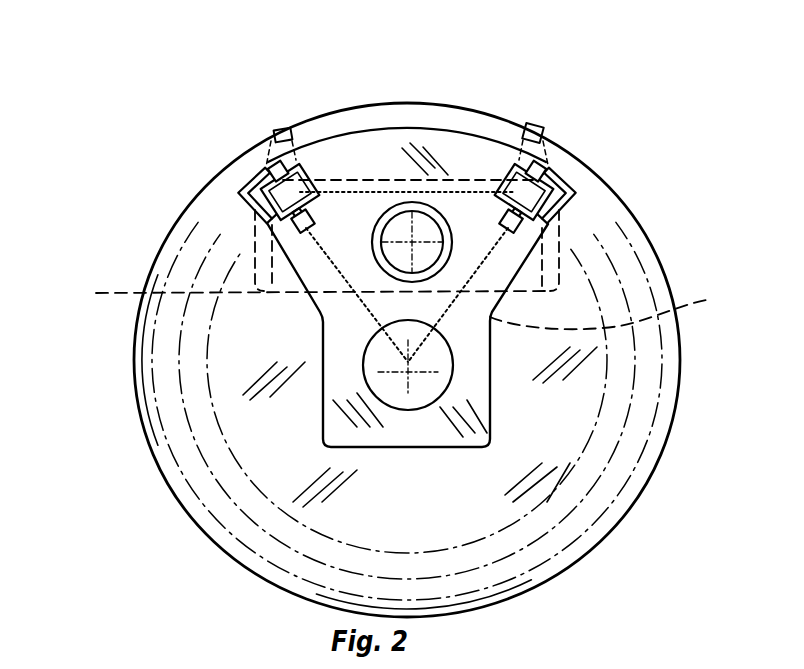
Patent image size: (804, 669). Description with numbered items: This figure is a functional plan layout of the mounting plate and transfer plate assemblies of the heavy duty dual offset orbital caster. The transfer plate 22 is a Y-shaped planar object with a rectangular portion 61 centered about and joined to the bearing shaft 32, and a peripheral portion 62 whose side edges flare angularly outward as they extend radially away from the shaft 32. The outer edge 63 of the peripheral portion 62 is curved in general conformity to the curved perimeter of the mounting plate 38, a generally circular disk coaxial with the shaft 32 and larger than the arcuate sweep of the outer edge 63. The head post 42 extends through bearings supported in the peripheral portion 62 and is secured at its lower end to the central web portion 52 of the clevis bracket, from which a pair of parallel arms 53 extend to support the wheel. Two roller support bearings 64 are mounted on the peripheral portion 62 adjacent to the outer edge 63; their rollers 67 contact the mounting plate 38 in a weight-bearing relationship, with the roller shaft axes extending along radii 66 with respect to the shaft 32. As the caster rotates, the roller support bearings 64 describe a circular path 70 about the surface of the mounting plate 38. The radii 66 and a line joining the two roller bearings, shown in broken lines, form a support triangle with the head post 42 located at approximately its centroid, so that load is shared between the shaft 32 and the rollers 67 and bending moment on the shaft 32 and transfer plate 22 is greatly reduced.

The transfer plate 22 is at (491, 398).
The bearing shaft 32 is at (407, 319).
The mounting plate 38 is at (412, 509).
The head post 42 is at (412, 242).
The central web portion 52 is at (553, 272).
The arms 53 is at (282, 122).
The rectangular portion 61 is at (323, 423).
The peripheral portion 62 is at (366, 158).
The outer edge 63 is at (424, 127).
The roller support bearings 64 is at (256, 166).
The radii 66 is at (401, 305).
The rollers 67 is at (320, 162).
The circular path 70 is at (597, 480).